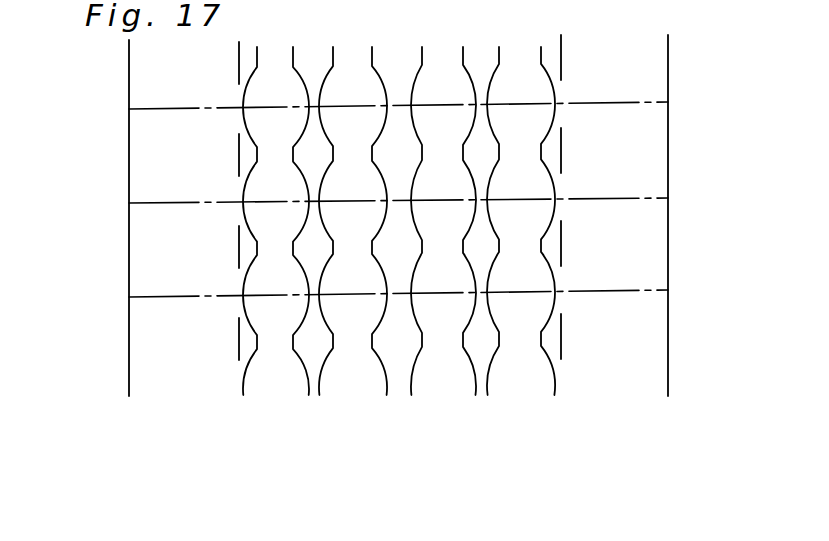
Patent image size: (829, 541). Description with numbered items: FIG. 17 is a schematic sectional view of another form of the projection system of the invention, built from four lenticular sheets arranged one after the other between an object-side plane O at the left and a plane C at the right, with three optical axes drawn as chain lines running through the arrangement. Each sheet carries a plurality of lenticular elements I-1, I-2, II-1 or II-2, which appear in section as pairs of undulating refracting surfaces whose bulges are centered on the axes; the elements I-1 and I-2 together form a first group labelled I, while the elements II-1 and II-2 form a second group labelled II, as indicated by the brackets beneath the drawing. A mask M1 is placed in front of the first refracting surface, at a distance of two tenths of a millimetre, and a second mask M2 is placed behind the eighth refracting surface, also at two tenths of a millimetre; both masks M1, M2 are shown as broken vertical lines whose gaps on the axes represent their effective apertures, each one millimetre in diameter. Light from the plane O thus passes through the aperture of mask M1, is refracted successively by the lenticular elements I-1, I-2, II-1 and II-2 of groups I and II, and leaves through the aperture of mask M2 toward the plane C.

The object plane O is at (128, 352).
The image (film) plane C is at (668, 335).
The mask M1 is at (242, 347).
The mask M2 is at (562, 343).
The first lens group I is at (320, 274).
The second lens group II is at (489, 274).
The lenticular elements I-1 is at (282, 383).
The lenticular elements I-2 is at (353, 253).
The lenticular elements II-1 is at (450, 377).
The lenticular elements II-2 is at (522, 253).